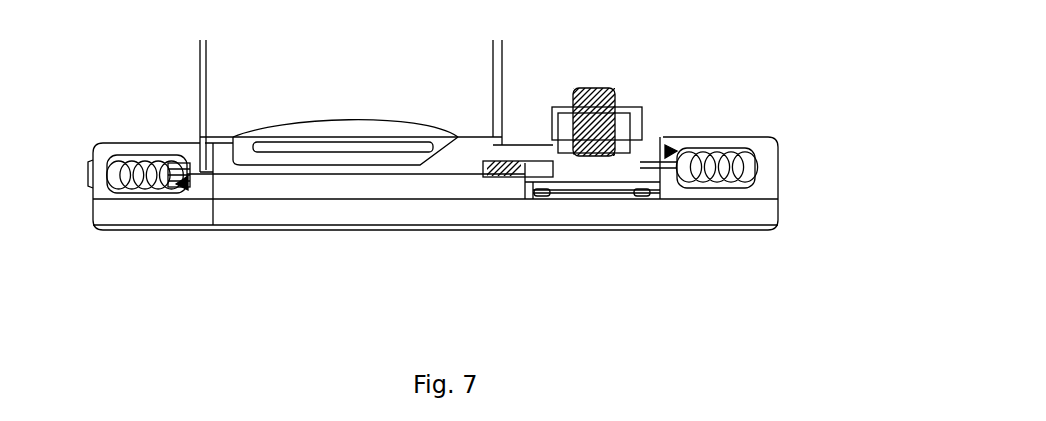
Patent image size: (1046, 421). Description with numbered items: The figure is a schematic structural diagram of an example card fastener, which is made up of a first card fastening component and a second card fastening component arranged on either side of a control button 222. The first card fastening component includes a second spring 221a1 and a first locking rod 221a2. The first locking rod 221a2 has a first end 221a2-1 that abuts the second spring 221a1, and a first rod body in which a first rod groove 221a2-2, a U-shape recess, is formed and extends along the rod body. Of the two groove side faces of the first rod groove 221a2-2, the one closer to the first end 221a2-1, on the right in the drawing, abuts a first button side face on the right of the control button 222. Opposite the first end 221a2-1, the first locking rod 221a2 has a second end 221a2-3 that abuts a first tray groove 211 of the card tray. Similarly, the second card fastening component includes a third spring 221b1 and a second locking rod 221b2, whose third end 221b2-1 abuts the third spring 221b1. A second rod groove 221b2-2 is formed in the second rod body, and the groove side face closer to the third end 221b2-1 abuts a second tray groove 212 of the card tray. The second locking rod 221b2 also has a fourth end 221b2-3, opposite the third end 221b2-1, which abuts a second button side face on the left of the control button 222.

The first tray groove 211 is at (488, 166).
The second tray groove 212 is at (210, 209).
The second spring 221a1 is at (743, 170).
The first locking rod 221a2 is at (672, 148).
The first end 221a2-1 is at (683, 173).
The first rod groove 221a2-2 is at (647, 173).
The second end 221a2-3 is at (503, 180).
The third spring 221b1 is at (130, 193).
The second locking rod 221b2 is at (183, 183).
The third end 221b2-1 is at (172, 170).
The second rod groove 221b2-2 is at (484, 164).
The fourth end 221b2-3 is at (523, 185).
The control button 222 is at (597, 178).